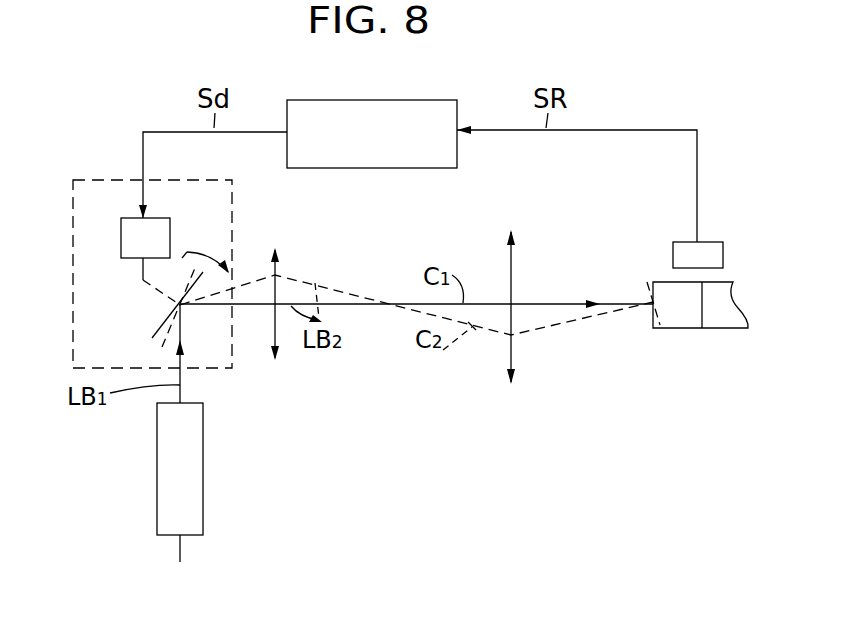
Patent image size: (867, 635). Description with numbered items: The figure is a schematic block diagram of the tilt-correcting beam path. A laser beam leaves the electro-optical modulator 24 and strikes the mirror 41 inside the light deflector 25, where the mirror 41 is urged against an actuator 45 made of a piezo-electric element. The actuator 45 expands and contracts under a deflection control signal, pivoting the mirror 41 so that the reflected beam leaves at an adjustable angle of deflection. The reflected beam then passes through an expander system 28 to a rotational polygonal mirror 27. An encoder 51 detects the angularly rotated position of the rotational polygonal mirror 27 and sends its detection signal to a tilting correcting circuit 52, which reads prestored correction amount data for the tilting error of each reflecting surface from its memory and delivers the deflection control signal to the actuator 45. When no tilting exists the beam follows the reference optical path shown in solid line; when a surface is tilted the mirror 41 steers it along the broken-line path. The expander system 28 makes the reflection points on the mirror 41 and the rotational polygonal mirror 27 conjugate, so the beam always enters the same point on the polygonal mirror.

The electro-optical modulator 24 is at (157, 508).
The light deflector 25 is at (102, 180).
The rotational polygonal mirror 27 is at (690, 322).
The expander system 28 is at (527, 387).
The mirror 41 is at (160, 323).
The actuator 45 is at (170, 230).
The encoder 51 is at (683, 245).
The tilting correcting circuit 52 is at (447, 98).